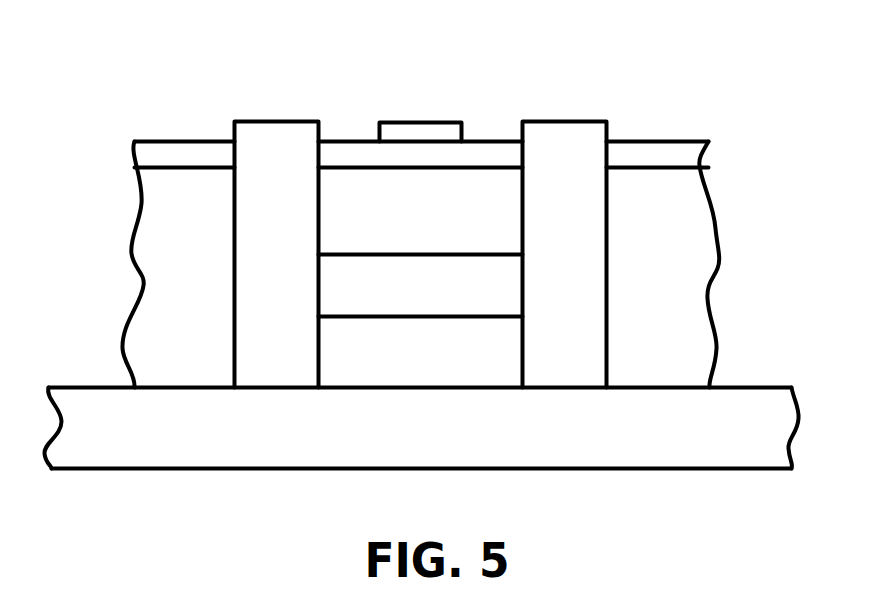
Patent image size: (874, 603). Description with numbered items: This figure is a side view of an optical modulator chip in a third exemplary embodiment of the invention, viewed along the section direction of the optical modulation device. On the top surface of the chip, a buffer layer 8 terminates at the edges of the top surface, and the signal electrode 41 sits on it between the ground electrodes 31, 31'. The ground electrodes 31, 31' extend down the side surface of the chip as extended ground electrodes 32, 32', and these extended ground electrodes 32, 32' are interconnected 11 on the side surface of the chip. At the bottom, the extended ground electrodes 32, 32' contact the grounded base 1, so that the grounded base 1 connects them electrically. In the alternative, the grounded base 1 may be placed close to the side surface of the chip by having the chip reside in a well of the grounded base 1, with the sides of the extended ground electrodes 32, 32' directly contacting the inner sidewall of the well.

The grounded base 1 is at (725, 408).
The buffer layer 8 is at (672, 148).
The interconnect on side surface 11 is at (387, 268).
The ground electrode 31 is at (586, 210).
The ground electrode 31' is at (297, 210).
The extended ground electrode 32 is at (642, 265).
The extended ground electrode 32' is at (200, 265).
The signal electrode 41 is at (395, 118).